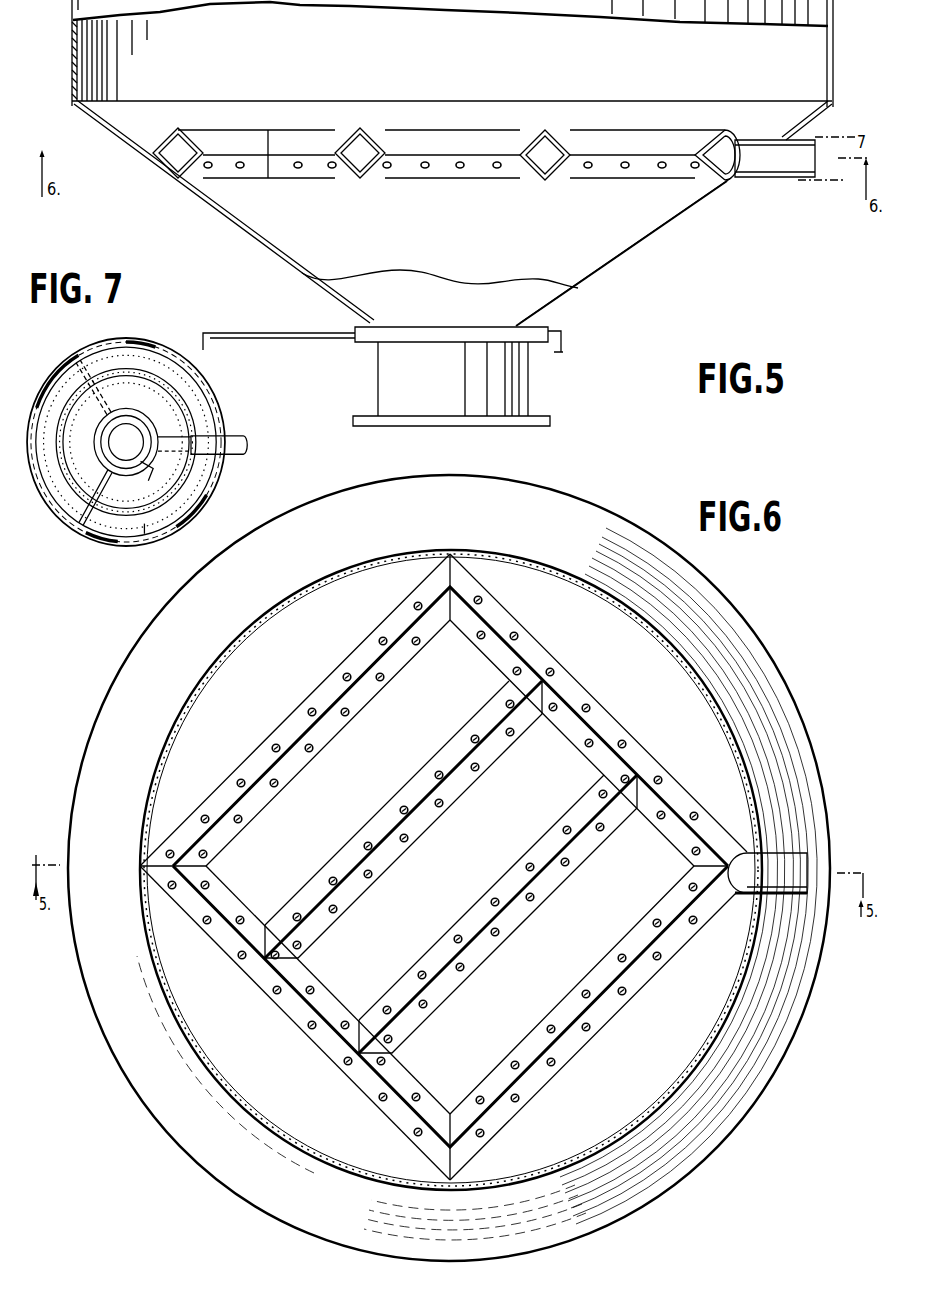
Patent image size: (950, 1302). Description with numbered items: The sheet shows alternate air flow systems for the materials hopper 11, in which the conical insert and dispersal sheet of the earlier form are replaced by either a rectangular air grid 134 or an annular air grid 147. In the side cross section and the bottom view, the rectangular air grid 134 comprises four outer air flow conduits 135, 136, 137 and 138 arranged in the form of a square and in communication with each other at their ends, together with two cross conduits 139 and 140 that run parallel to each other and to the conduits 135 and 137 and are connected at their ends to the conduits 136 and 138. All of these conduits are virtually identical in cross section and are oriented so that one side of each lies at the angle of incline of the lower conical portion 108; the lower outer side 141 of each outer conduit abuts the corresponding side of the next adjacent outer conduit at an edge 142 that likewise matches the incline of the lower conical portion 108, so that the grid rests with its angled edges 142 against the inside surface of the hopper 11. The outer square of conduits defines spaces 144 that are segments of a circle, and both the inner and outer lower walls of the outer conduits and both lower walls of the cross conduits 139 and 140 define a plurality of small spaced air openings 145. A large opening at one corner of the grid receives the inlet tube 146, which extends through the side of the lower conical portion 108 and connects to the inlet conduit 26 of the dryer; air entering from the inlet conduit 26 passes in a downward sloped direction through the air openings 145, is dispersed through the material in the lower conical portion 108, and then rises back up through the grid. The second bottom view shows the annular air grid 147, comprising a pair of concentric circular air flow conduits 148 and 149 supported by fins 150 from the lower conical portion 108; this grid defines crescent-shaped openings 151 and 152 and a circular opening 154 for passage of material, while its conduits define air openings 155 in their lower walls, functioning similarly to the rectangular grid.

In FIG. 5, the materials hopper 11 is at (838, 83).
In FIG. 6, the materials hopper 11 is at (830, 807).
In FIG. 7, the materials hopper 11 is at (228, 412).
In FIG. 5, the inlet conduit 26 is at (819, 182).
In FIG. 5, the lower conical portion 108 is at (604, 270).
In FIG. 6, the lower conical portion 108 is at (680, 1093).
In FIG. 7, the lower conical portion 108 is at (215, 487).
In FIG. 5, the rectangular air grid 134 is at (448, 129).
In FIG. 6, the rectangular air grid 134 is at (353, 1096).
In FIG. 5, the outer air flow conduit 135 is at (622, 138).
In FIG. 6, the outer air flow conduit 135 is at (611, 998).
In FIG. 6, the outer air flow conduit 136 is at (612, 730).
In FIG. 6, the outer air flow conduit 137 is at (320, 690).
In FIG. 5, the outer air flow conduit 138 is at (208, 138).
In FIG. 6, the outer air flow conduit 138 is at (325, 1034).
In FIG. 5, the cross conduit 139 is at (521, 138).
In FIG. 6, the cross conduit 139 is at (507, 877).
In FIG. 5, the cross conduit 140 is at (320, 137).
In FIG. 6, the cross conduit 140 is at (420, 829).
In FIG. 5, the lower outer side 141 is at (223, 169).
In FIG. 6, the lower outer side 141 is at (451, 622).
In FIG. 5, the edge 142 is at (193, 182).
In FIG. 6, the edge 142 is at (452, 578).
In FIG. 6, the spaces 144 is at (240, 724).
In FIG. 5, the air openings 145 is at (389, 170).
In FIG. 6, the air openings 145 is at (694, 818).
In FIG. 5, the inlet tube 146 is at (762, 180).
In FIG. 6, the inlet tube 146 is at (752, 866).
In FIG. 7, the annular air grid 147 is at (122, 364).
In FIG. 7, the circular air flow conduit 148 is at (195, 388).
In FIG. 7, the circular air flow conduit 149 is at (143, 418).
In FIG. 7, the fins 150 is at (68, 363).
In FIG. 7, the crescent-shaped opening 151 is at (137, 539).
In FIG. 7, the crescent-shaped opening 152 is at (183, 523).
In FIG. 7, the circular opening 154 is at (140, 453).
In FIG. 7, the air openings 155 is at (152, 472).